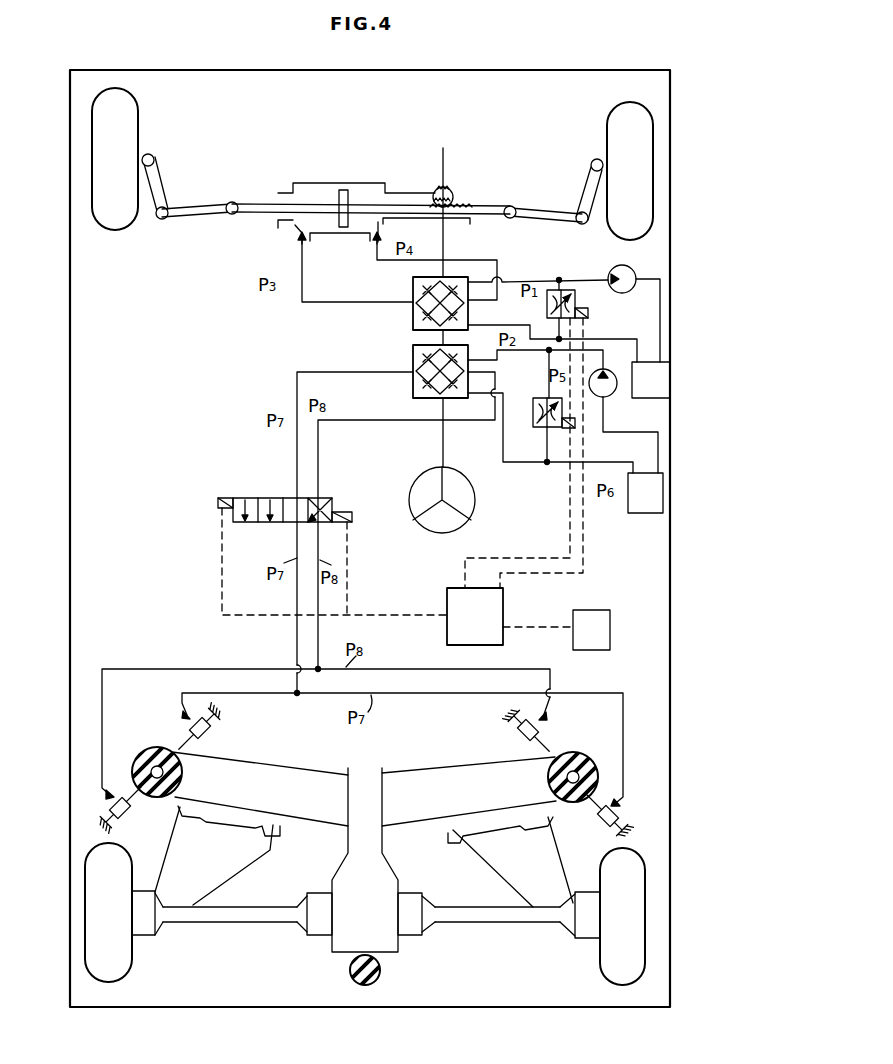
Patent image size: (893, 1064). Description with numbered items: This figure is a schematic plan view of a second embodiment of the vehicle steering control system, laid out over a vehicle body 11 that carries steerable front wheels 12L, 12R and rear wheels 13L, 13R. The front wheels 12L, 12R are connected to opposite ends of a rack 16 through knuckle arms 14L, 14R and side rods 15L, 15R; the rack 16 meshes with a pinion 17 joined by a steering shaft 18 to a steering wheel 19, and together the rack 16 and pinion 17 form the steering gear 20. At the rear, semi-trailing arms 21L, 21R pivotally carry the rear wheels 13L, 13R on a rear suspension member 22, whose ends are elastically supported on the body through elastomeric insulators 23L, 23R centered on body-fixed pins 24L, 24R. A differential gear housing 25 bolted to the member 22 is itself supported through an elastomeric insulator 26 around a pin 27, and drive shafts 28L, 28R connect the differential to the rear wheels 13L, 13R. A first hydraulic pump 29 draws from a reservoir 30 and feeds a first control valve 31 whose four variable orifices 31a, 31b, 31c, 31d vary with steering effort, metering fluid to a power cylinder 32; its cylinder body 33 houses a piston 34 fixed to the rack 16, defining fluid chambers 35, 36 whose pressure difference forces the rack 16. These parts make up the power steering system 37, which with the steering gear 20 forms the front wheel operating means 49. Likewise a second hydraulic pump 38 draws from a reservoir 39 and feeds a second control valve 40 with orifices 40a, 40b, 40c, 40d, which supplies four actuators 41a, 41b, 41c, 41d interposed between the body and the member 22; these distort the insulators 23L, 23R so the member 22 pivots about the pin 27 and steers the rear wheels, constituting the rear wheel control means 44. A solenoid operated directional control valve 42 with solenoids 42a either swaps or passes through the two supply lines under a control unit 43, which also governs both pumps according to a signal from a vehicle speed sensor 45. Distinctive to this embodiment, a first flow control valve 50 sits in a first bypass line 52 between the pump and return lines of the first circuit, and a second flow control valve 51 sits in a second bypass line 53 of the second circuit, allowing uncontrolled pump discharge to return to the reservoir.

The vehicle body 11 is at (462, 68).
The steerable front wheel 12L is at (107, 218).
The steerable front wheel 12R is at (647, 142).
The rear wheel 13L is at (122, 968).
The rear wheel 13R is at (603, 972).
The knuckle arm 14L is at (160, 173).
The knuckle arm 14R is at (590, 186).
The side rod 15L is at (172, 222).
The side rod 15R is at (541, 208).
The rack 16 is at (253, 202).
The pinion 17 is at (443, 183).
The steering shaft 18 is at (445, 240).
The steering wheel 19 is at (450, 522).
The steering gear 20 is at (457, 188).
The semi-trailing arm 21L is at (243, 862).
The semi-trailing arm 21R is at (498, 870).
The rear suspension member 22 is at (385, 768).
The elastomeric insulator 23L is at (151, 747).
The elastomeric insulator 23R is at (567, 761).
The pin 24L is at (160, 762).
The pin 24R is at (568, 765).
The differential gear housing 25 is at (366, 860).
The elastomeric insulator 26 is at (348, 968).
The pin 27 is at (380, 970).
The drive shaft 28L is at (232, 922).
The drive shaft 28R is at (505, 922).
The first hydraulic pump 29 is at (636, 272).
The reservoir 30 is at (670, 380).
The first control valve 31 is at (405, 296).
The variable orifice 31a is at (428, 291).
The variable orifice 31b is at (428, 318).
The variable orifice 31c is at (455, 282).
The variable orifice 31d is at (468, 312).
The power cylinder 32 is at (373, 156).
The cylinder body 33 is at (372, 172).
The piston 34 is at (343, 189).
The fluid chamber 35 is at (312, 185).
The fluid chamber 36 is at (390, 193).
The power steering system 37 is at (278, 243).
The second hydraulic pump 38 is at (606, 396).
The reservoir 39 is at (664, 504).
The second control valve 40 is at (438, 398).
The variable orifice 40a is at (425, 362).
The variable orifice 40b is at (425, 385).
The variable orifice 40c is at (462, 362).
The variable orifice 40d is at (455, 384).
The actuator 41a is at (208, 732).
The actuator 41b is at (130, 802).
The actuator 41c is at (520, 734).
The actuator 41d is at (602, 820).
The solenoid operated directional control valve 42 is at (263, 506).
The solenoid 42a is at (345, 506).
The control unit 43 is at (510, 600).
The rear wheel control means 44 is at (240, 665).
The vehicle speed sensor 45 is at (610, 625).
The front wheel operating means 49 is at (452, 178).
The first flow control valve 50 is at (565, 288).
The second flow control valve 51 is at (547, 470).
The first bypass line 52 is at (565, 327).
The second bypass line 53 is at (533, 447).